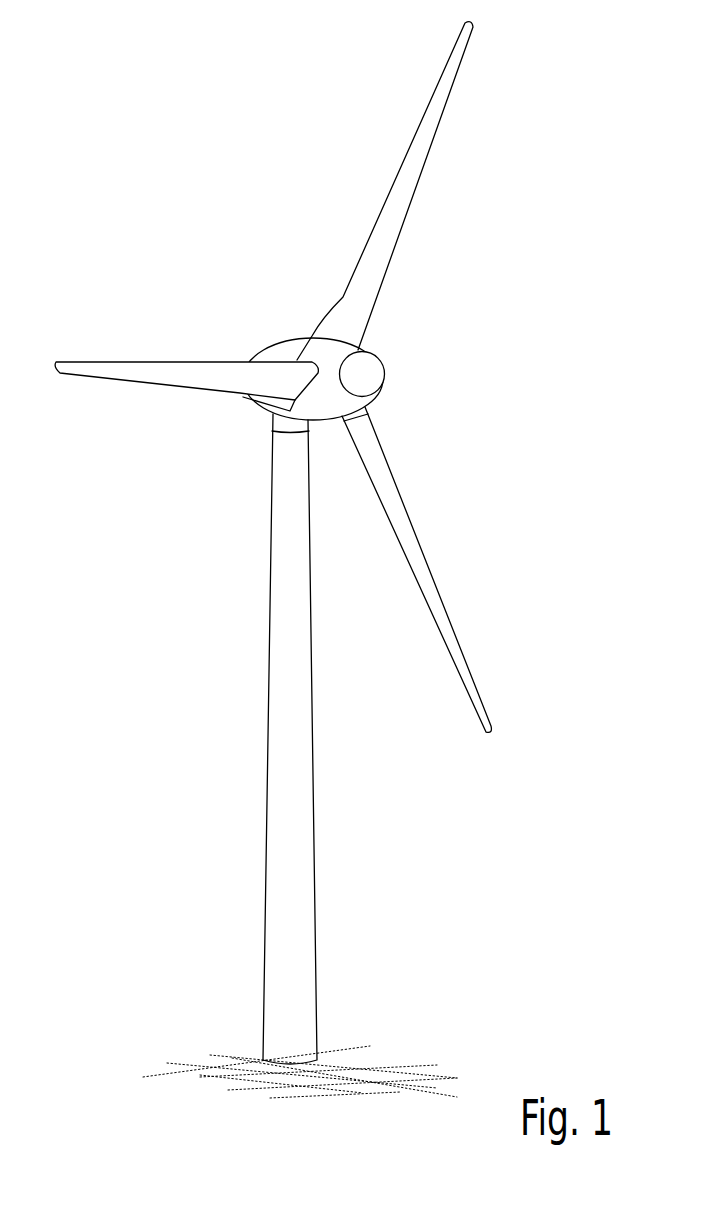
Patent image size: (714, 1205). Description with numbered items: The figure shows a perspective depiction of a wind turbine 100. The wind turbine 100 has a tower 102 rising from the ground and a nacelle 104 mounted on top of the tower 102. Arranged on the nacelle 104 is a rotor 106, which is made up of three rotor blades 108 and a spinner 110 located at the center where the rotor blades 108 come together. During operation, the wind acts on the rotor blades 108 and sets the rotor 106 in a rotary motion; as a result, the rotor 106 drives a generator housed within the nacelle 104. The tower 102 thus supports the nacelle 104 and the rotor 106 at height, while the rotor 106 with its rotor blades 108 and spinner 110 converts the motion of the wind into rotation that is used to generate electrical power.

The wind turbine 100 is at (216, 496).
The tower 102 is at (313, 830).
The nacelle 104 is at (276, 346).
The rotor 106 is at (507, 283).
The rotor blades 108 is at (402, 182).
The spinner 110 is at (384, 373).